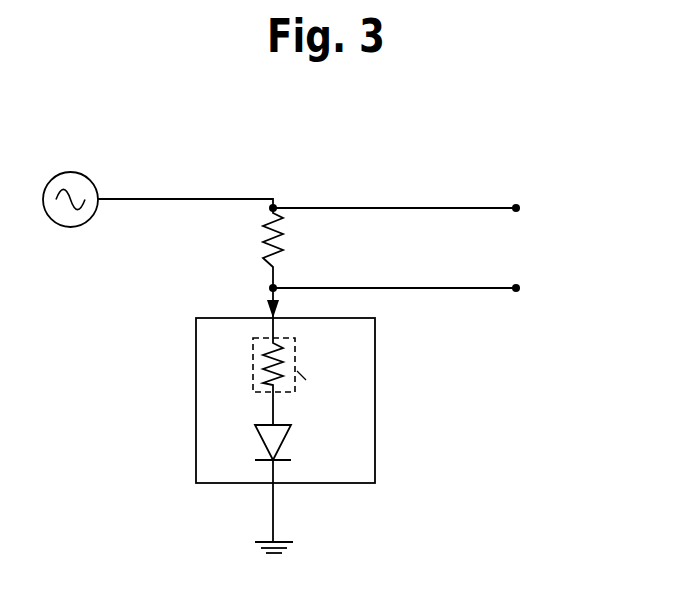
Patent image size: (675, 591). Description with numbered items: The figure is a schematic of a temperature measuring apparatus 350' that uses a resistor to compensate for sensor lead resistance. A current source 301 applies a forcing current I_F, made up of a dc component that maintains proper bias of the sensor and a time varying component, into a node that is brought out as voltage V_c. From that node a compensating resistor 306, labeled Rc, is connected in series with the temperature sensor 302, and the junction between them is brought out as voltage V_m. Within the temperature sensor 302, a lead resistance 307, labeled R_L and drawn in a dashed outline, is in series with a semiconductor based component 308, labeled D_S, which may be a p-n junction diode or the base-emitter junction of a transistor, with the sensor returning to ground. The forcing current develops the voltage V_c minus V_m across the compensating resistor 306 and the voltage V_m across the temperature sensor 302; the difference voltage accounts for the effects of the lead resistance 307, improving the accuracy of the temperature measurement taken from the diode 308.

The current source 301 is at (70, 175).
The temperature sensor 302 is at (228, 400).
The compensating resistor 306 is at (246, 263).
The lead resistance 307 is at (343, 371).
The semiconductor based component 308 is at (329, 454).
The temperature measuring apparatus 350' is at (354, 205).